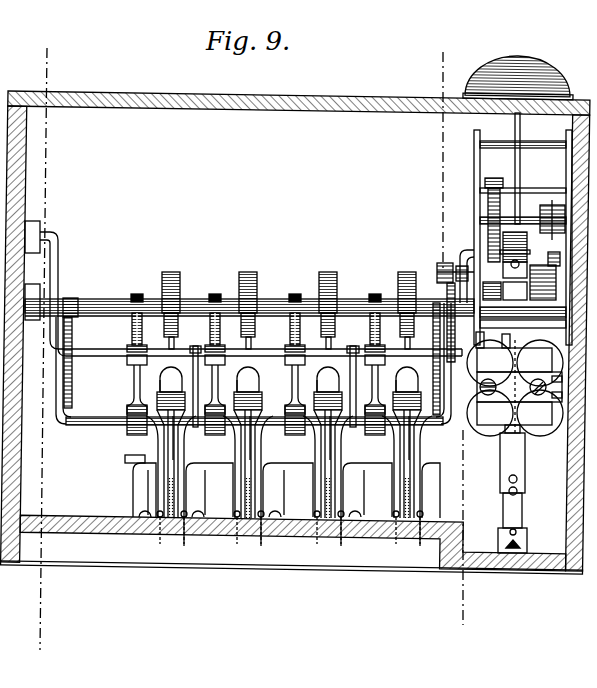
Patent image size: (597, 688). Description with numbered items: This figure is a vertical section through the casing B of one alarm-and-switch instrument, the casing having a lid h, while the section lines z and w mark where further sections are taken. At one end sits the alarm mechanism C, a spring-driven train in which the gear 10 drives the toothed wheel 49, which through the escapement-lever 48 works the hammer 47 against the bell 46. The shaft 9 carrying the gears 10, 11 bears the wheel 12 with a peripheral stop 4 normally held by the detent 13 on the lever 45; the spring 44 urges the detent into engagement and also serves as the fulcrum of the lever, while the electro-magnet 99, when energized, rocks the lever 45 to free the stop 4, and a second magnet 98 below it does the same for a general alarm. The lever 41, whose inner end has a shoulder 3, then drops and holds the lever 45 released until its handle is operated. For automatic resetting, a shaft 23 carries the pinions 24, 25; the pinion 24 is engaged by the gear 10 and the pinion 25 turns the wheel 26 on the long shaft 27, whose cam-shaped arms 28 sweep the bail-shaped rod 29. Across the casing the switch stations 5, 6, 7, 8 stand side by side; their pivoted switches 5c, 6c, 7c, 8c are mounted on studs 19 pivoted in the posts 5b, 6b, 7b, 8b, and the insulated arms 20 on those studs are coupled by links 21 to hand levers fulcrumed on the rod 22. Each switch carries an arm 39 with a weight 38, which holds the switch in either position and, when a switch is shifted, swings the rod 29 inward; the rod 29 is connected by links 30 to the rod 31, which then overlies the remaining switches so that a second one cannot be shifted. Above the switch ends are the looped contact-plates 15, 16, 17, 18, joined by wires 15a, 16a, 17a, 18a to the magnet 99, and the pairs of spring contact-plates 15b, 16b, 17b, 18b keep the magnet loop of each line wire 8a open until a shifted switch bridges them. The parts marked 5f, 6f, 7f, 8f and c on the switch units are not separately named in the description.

The casing B is at (26, 218).
The lid h is at (241, 94).
The section line z z is at (40, 344).
The section line w w is at (451, 340).
The bell 46 is at (518, 55).
The alarm mechanism C is at (474, 175).
The hammer 47 is at (521, 176).
The escapement-lever 48 is at (494, 178).
The toothed wheel 49 is at (500, 212).
The gear 11 is at (540, 216).
The wheel 12 is at (515, 247).
The shaft 9 is at (514, 243).
The stop 4 is at (503, 264).
The shaft 23 is at (492, 291).
The detent 13 is at (515, 291).
The pinion 24 is at (546, 280).
The pinion 25 is at (437, 266).
The wheel 26 is at (447, 292).
The shaft 27 is at (108, 295).
The rod 22 is at (249, 323).
The rod 31 is at (56, 376).
The cam-shaped arms 28 is at (72, 343).
The rod 29 is at (116, 349).
The links 30 is at (196, 346).
The short shafts or studs 19 is at (122, 421).
The weights 38 is at (182, 278).
The arms 39 is at (169, 343).
The valve stem 8f is at (137, 294).
The valve stem 7f is at (215, 294).
The valve stem 6f is at (295, 294).
The valve stem 5f is at (375, 294).
The valve 8 is at (140, 337).
The valve 7 is at (219, 336).
The valve 6 is at (299, 336).
The valve 5 is at (379, 335).
The links 21 is at (134, 386).
The arms 20 is at (130, 437).
The contact-plate 18 is at (153, 449).
The contact-plate 17 is at (231, 456).
The contact-plate 16 is at (311, 456).
The contact-plate 15 is at (391, 457).
The cap c is at (293, 379).
The pivoted switch 8c is at (175, 455).
The pivoted switch 7c is at (252, 458).
The pivoted switch 6c is at (332, 456).
The pivoted switch 5c is at (411, 457).
The spring contact-plates 18b is at (147, 466).
The post 8b is at (172, 490).
The spring contact-plates 17b is at (228, 466).
The post 7b is at (252, 488).
The spring contact-plates 16b is at (308, 466).
The post 6b is at (340, 489).
The spring contact-plates 15b is at (388, 467).
The post 5b is at (418, 489).
The wire 8a is at (396, 544).
The wire 18a is at (184, 546).
The wire 17a is at (261, 546).
The wire 16a is at (341, 546).
The wire 15a is at (420, 546).
The shoulder 3 is at (476, 336).
The lever 41 is at (512, 335).
The gear 10 is at (540, 348).
The electro-magnet 99 is at (515, 350).
The second magnet 98 is at (513, 433).
The lever 45 is at (512, 464).
The spring 44 is at (512, 523).